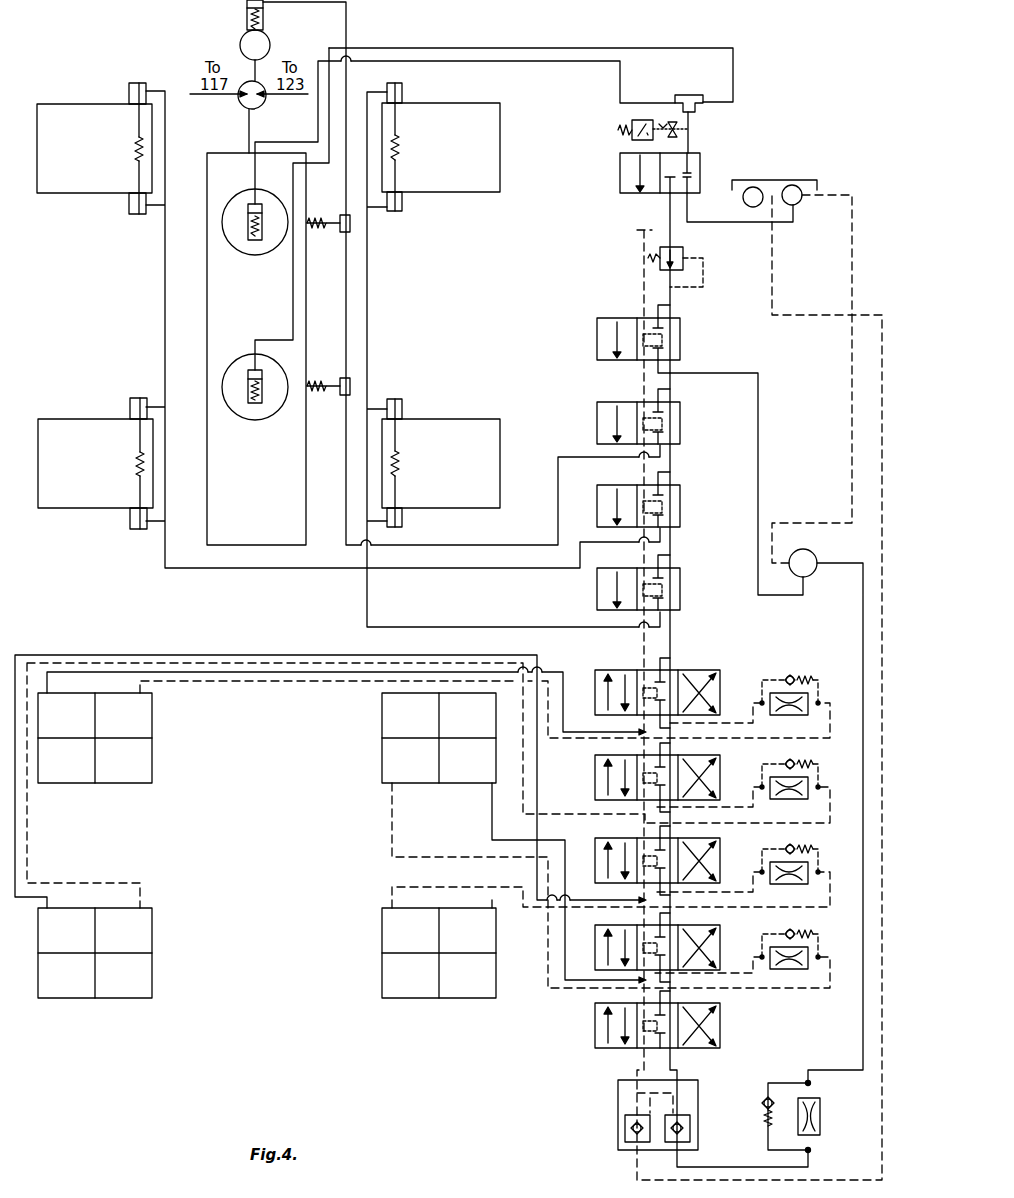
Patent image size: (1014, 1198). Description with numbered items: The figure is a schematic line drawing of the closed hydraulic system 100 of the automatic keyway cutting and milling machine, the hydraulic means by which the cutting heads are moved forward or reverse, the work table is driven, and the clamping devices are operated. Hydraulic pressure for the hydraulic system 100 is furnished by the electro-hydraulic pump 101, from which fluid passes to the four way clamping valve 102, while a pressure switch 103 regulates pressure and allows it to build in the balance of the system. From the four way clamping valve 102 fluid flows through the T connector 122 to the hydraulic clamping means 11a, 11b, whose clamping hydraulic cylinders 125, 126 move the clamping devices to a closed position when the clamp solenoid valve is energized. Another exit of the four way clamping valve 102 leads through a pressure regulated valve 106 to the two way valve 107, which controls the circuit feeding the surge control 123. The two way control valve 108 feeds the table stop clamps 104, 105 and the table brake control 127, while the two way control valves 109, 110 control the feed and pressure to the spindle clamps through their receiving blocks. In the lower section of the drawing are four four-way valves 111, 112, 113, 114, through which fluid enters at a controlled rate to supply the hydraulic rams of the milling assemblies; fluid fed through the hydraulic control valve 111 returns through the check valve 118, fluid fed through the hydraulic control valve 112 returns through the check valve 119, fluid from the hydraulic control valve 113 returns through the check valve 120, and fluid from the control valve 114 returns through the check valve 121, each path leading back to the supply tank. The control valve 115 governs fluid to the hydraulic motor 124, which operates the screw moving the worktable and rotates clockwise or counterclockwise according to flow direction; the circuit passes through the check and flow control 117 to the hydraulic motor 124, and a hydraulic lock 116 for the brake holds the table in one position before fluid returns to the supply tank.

The hydraulic clamping means 11a is at (236, 415).
The hydraulic clamping means 11b is at (222, 236).
The hydraulic system 100 is at (487, 44).
The electro-hydraulic pump 101 is at (772, 180).
The four way clamping valve 102 is at (620, 184).
The pressure switch 103 is at (617, 140).
The table stop clamp 104 is at (331, 213).
The table stop clamp 105 is at (336, 399).
The pressure regulated valve 106 is at (686, 258).
The two way valve 107 is at (683, 345).
The two way control valve 108 is at (683, 427).
The two way control valve 109 is at (683, 510).
The two way control valve 110 is at (683, 594).
The hydraulic control valve 111 is at (718, 690).
The hydraulic control valve 112 is at (716, 775).
The hydraulic control valve 113 is at (716, 860).
The control valve 114 is at (716, 945).
The control valve 115 is at (718, 1025).
The hydraulic lock 116 is at (700, 1100).
The check and flow control 117 is at (768, 1140).
The check valve 118 is at (820, 705).
The check valve 119 is at (820, 788).
The check valve 120 is at (820, 872).
The check valve 121 is at (820, 955).
The T connector 122 is at (680, 95).
The surge control 123 is at (812, 573).
The hydraulic motor 124 is at (246, 103).
The clamping hydraulic cylinder 125 is at (263, 230).
The clamping hydraulic cylinder 126 is at (248, 383).
The table brake control 127 is at (240, 44).